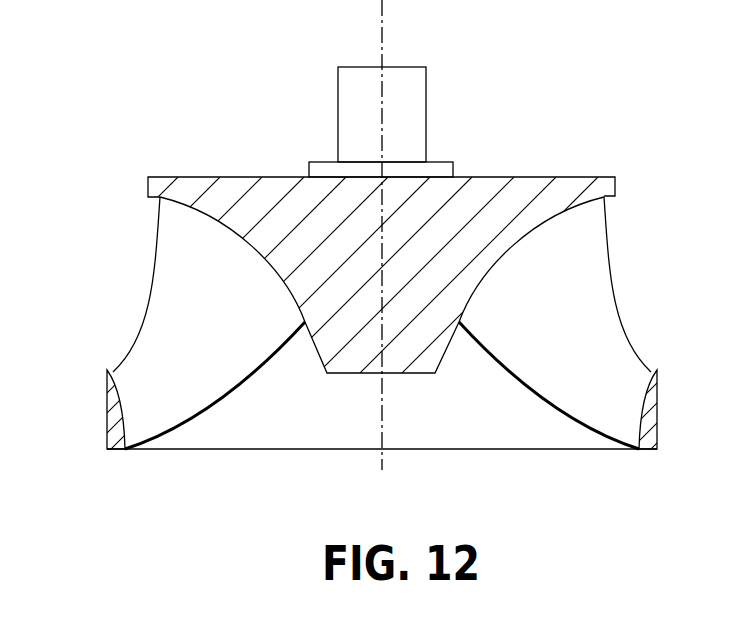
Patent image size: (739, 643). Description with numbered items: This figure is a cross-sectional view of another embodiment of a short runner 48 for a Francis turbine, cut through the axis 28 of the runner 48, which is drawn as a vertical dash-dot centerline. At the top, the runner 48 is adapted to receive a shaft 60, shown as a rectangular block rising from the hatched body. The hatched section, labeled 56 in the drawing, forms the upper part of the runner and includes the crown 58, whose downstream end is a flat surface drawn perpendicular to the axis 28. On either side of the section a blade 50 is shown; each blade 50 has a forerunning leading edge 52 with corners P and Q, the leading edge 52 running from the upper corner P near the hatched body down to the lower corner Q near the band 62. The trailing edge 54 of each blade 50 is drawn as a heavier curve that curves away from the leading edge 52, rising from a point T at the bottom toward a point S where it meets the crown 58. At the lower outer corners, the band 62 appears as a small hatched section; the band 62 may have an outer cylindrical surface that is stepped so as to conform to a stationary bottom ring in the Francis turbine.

The axis 28 is at (384, 42).
The short runner 48 is at (83, 158).
The blade 50 is at (226, 319).
The forerunning leading edge 52 is at (150, 297).
The trailing edge 54 is at (168, 430).
The mold plate 56 is at (565, 190).
The crown 58 is at (342, 375).
The shaft 60 is at (400, 107).
The band 62 is at (114, 385).
The corner P is at (158, 201).
The corner Q is at (114, 368).
The point S is at (305, 327).
The point T is at (126, 453).